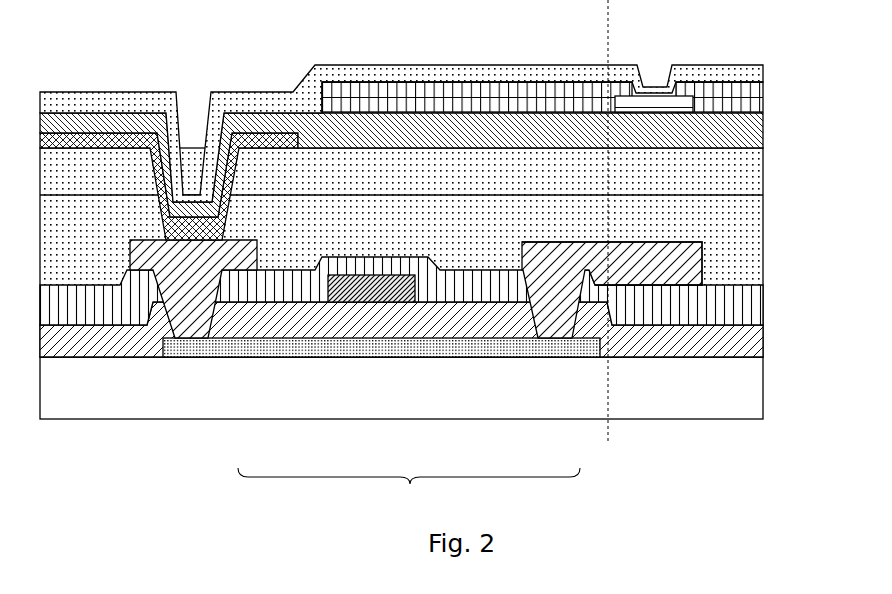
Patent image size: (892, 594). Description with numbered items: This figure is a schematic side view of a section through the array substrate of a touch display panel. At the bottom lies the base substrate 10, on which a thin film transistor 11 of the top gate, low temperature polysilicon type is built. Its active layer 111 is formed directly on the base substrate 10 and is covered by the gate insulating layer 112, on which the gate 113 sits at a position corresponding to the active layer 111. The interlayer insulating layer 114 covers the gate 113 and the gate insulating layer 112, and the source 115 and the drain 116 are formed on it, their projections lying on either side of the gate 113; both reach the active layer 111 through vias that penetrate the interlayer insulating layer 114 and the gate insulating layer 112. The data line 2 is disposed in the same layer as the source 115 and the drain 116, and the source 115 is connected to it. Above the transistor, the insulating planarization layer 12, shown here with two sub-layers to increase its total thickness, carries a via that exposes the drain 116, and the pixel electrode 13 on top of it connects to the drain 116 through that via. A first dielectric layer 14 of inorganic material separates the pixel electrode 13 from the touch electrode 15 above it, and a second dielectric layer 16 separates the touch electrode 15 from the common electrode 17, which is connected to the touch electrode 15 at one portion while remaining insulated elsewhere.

The data line 2 is at (670, 265).
The base substrate 10 is at (677, 380).
The thin film transistor 11 is at (409, 487).
The active layer 111 is at (285, 348).
The gate insulating layer 112 is at (345, 323).
The gate 113 is at (383, 290).
The interlayer insulating layer 114 is at (450, 290).
The source 115 is at (543, 300).
The drain 116 is at (187, 308).
The insulating planarization layer 12 is at (713, 218).
The pixel electrode 13 is at (247, 147).
The first dielectric layer 14 is at (715, 135).
The touch electrode 15 is at (647, 108).
The second dielectric layer 16 is at (512, 102).
The common electrode 17 is at (468, 75).